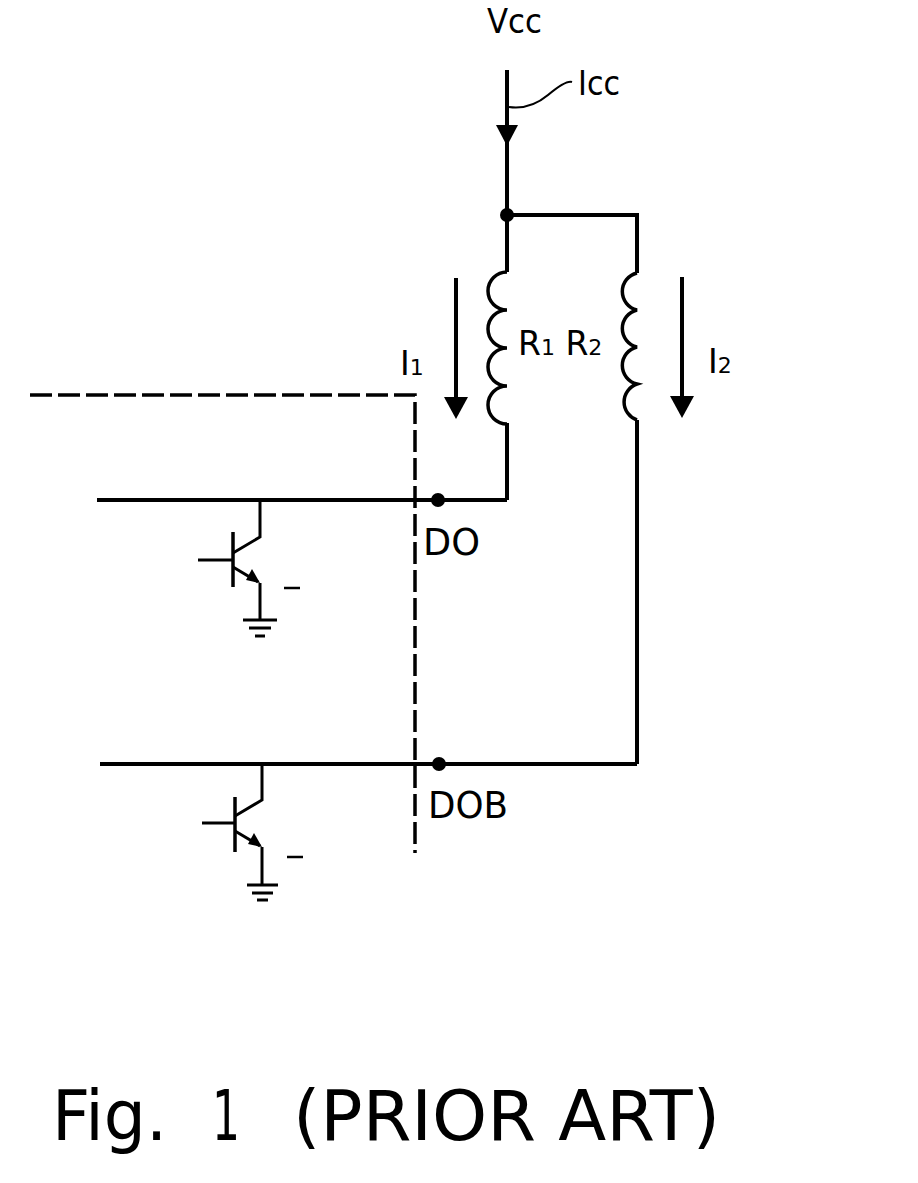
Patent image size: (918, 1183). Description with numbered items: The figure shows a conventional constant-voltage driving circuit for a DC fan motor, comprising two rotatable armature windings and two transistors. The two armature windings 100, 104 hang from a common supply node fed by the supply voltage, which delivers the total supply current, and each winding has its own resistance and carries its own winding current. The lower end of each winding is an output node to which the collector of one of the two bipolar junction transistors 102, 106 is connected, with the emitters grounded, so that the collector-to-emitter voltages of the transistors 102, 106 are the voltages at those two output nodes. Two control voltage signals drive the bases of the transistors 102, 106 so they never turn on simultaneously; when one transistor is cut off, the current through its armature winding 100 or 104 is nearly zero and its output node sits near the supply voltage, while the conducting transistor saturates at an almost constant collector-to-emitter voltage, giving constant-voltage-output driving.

The armature winding 100 is at (483, 275).
The transistor 102 is at (226, 570).
The armature winding 104 is at (653, 278).
The transistor 106 is at (227, 833).